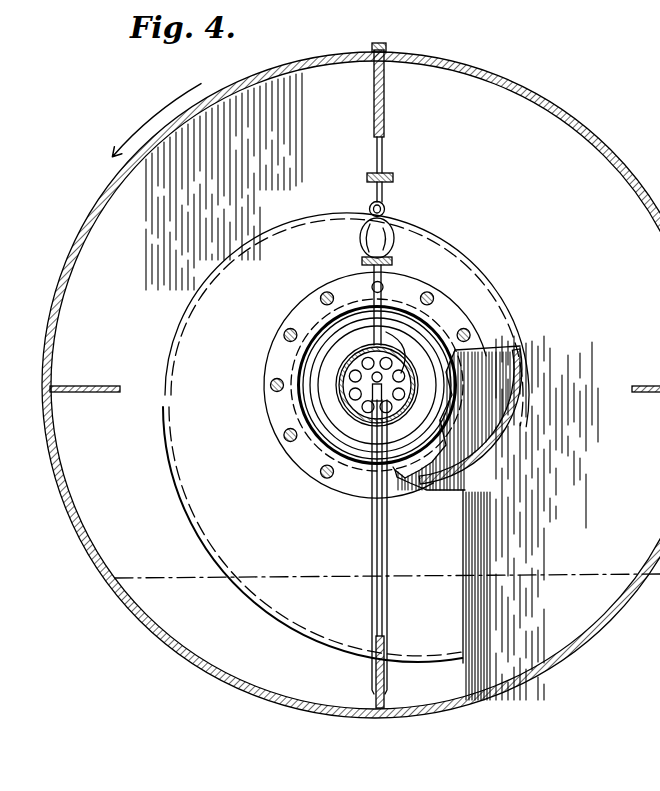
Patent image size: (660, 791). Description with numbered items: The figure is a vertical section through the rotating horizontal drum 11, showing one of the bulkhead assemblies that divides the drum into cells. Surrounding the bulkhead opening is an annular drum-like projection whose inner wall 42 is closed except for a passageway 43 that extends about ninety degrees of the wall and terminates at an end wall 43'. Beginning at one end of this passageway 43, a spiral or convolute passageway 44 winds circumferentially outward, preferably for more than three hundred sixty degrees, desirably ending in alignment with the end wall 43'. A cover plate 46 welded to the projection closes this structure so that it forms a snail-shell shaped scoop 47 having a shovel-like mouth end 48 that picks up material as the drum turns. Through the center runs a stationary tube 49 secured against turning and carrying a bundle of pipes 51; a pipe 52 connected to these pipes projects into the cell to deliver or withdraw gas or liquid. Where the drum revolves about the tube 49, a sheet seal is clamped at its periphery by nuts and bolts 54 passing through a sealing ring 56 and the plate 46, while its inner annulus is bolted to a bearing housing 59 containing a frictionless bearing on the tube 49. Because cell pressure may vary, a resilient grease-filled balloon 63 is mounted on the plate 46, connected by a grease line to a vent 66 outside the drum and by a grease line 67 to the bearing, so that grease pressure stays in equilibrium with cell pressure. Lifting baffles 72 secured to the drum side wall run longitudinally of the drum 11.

The drum 11 is at (551, 89).
The inner wall 42 is at (462, 354).
The passageway 43 is at (460, 419).
The end wall 43' is at (476, 420).
The spiral passageway 44 is at (462, 265).
The cover plate 46 is at (321, 559).
The scoop 47 is at (469, 634).
The mouth end 48 is at (466, 524).
The tube 49 is at (352, 390).
The pipes 51 is at (388, 334).
The pipe 52 is at (373, 588).
The nuts and bolts 54 is at (283, 334).
The sealing ring 56 is at (343, 486).
The bearing housing 59 is at (313, 433).
The balloon 63 is at (361, 241).
The vent 66 is at (385, 44).
The grease line 67 is at (384, 278).
The lifting baffles 72 is at (373, 97).